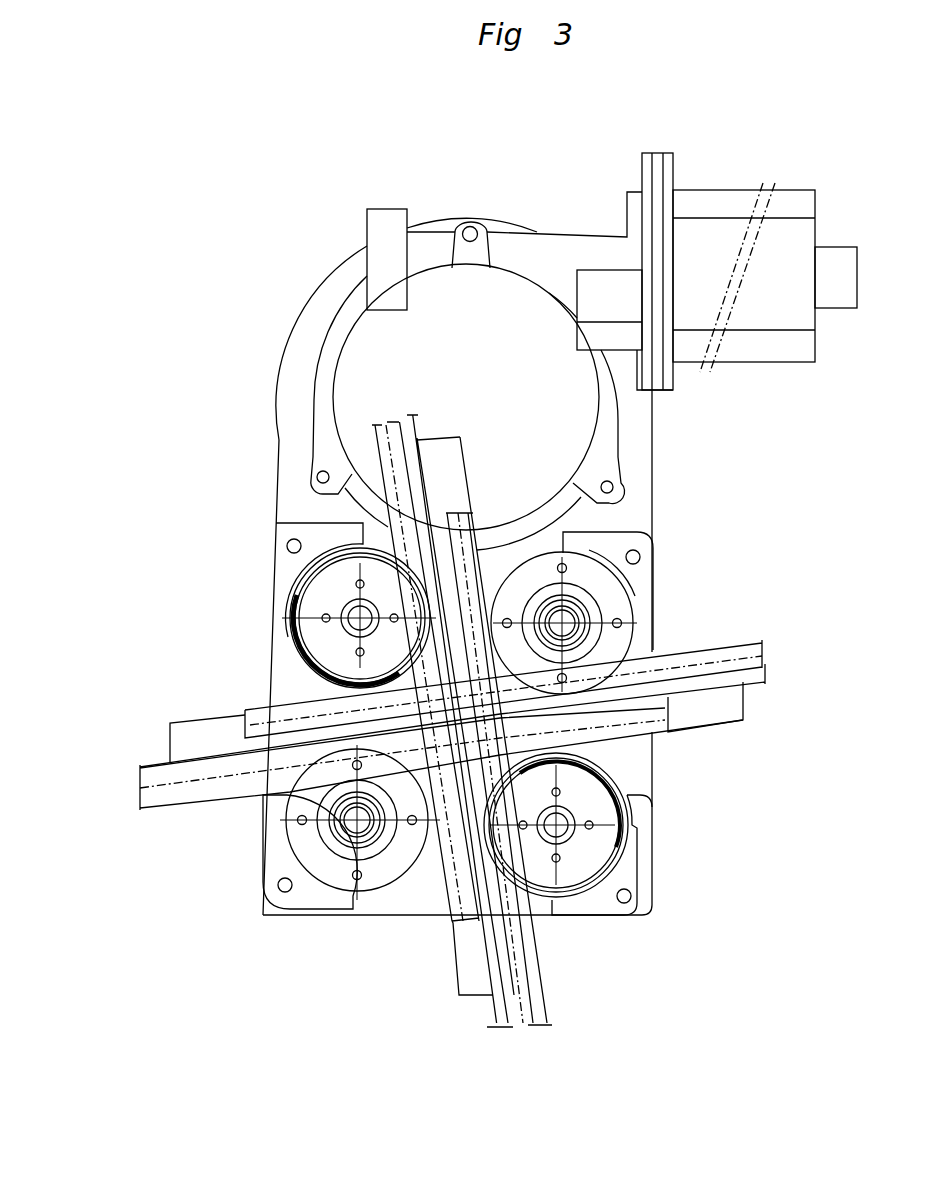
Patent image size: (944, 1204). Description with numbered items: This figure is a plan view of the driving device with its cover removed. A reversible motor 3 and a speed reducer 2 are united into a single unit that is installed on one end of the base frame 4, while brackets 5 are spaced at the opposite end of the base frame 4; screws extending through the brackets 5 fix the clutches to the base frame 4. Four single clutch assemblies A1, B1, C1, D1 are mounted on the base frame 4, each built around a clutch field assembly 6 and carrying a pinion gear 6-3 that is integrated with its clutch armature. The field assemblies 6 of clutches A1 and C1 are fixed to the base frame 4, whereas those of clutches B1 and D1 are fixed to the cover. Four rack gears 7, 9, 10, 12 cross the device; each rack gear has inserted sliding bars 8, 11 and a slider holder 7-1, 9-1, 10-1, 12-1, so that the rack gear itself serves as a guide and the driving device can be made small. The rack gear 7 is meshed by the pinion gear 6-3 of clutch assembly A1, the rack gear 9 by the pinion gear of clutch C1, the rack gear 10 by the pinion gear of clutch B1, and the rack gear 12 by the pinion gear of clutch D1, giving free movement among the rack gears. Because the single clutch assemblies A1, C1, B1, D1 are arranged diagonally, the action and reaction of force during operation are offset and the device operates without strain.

The speed reducer 2 is at (517, 293).
The reversible motor 3 is at (722, 197).
The base frame 4 is at (653, 500).
The bracket 5 is at (648, 554).
The clutch field assembly 6 is at (466, 761).
The pinion gear 6-3 is at (463, 759).
The rack gear 7 is at (450, 910).
The slider holder 7-1 is at (466, 962).
The sliding bar 8 is at (495, 1013).
The rack gear 9 is at (540, 996).
The slider holder 9-1 is at (456, 466).
The rack gear 10 is at (765, 640).
The slider holder 10-1 is at (190, 728).
The sliding bar 11 is at (770, 688).
The rack gear 12 is at (676, 736).
The slider holder 12-1 is at (752, 716).
The single clutch assembly A1 is at (292, 665).
The single clutch assembly B1 is at (626, 640).
The single clutch assembly C1 is at (636, 825).
The single clutch assembly D1 is at (377, 895).